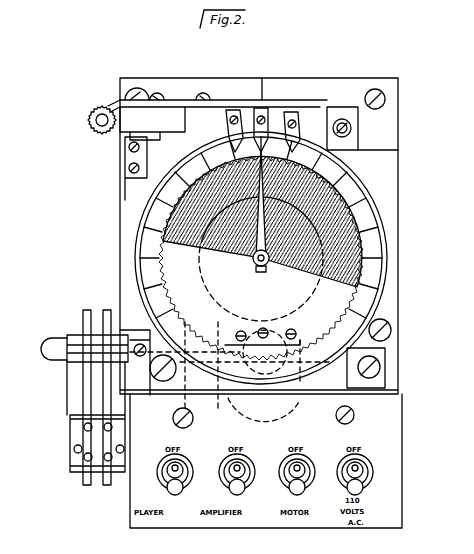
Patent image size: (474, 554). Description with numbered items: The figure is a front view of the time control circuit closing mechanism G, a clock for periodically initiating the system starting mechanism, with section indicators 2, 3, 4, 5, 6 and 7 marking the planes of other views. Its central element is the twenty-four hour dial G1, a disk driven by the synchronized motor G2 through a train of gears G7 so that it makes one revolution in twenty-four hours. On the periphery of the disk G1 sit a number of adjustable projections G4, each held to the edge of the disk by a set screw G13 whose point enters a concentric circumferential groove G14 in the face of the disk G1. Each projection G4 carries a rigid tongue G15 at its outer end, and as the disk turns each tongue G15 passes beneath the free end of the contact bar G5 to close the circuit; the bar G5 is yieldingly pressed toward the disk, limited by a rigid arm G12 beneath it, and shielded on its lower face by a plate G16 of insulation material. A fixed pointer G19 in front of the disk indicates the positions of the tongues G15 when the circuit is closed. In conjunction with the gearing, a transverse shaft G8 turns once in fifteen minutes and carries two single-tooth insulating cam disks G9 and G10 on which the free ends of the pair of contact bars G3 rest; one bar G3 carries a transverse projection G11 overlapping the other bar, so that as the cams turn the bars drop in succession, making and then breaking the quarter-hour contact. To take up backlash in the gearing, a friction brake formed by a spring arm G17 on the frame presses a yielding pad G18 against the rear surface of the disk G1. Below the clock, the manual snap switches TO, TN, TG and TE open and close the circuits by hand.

The clock G is at (396, 136).
The twenty-four hour dial G1 is at (368, 204).
The synchronized motor G2 is at (224, 282).
The contacts G3 is at (104, 338).
The projections G4 is at (206, 146).
The contact bar G5 is at (268, 104).
The train of gears G7 is at (378, 238).
The transverse shaft G8 is at (232, 388).
The cam disk G9 is at (84, 380).
The cam disk G10 is at (128, 400).
The transverse projection G11 is at (100, 357).
The rigid arm G12 is at (218, 108).
The set screw G13 is at (336, 172).
The concentric circumferential groove G14 is at (366, 282).
The rigid tongue G15 is at (280, 137).
The plate of insulation material G16 is at (234, 104).
The spring arm G17 is at (358, 132).
The yielding pad G18 is at (370, 218).
The fixed pointer G19 is at (253, 262).
The section line 2 is at (268, 530).
The section line 3 is at (257, 80).
The section line 4 is at (34, 338).
The section line 5 is at (316, 112).
The section line 6 is at (340, 107).
The section line 7 is at (60, 333).
The snap switch TO is at (164, 478).
The snap switch TN is at (226, 484).
The snap switch TG is at (287, 486).
The snap switch TE is at (374, 470).